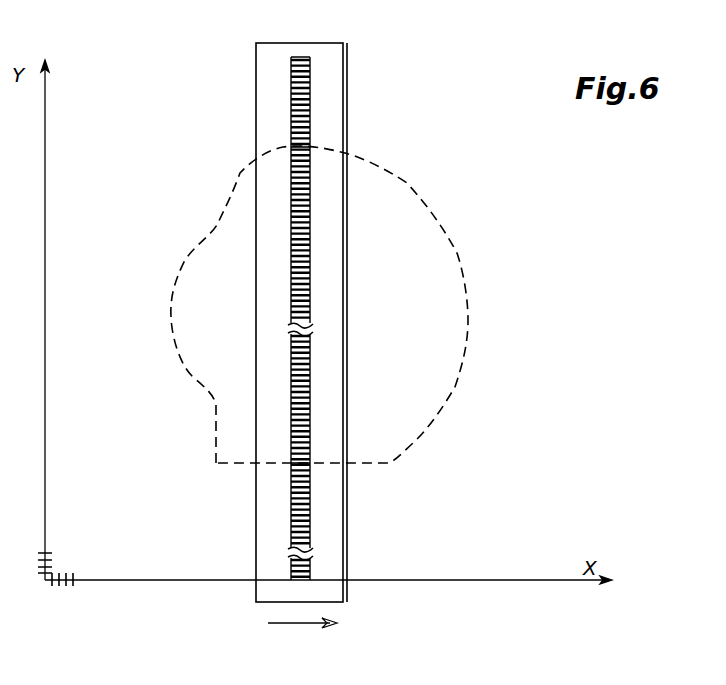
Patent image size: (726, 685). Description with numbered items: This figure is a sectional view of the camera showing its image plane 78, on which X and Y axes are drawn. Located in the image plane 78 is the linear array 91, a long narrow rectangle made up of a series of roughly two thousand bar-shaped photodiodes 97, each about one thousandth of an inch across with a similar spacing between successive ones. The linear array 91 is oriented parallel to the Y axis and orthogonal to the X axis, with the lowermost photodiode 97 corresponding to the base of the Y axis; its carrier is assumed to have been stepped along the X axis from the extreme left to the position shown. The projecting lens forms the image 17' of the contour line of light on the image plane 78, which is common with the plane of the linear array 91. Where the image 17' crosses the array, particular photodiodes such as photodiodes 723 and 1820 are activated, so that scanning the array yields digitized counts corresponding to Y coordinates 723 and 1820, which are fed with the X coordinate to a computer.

The bar-shaped photodiodes 97 is at (308, 82).
The photodiode / Y coordinate 1820 is at (303, 149).
The image of contour line 17' is at (333, 304).
The image plane 78 is at (546, 404).
The linear array 91 is at (355, 482).
The photodiode / Y coordinate 723 is at (297, 463).